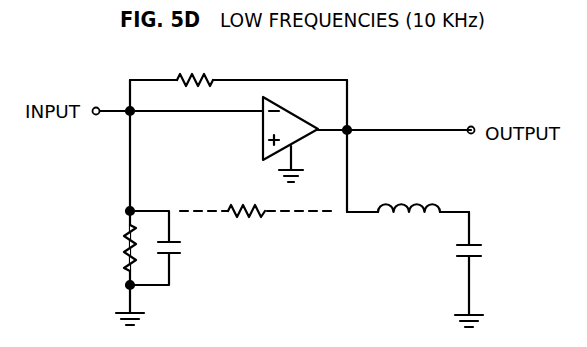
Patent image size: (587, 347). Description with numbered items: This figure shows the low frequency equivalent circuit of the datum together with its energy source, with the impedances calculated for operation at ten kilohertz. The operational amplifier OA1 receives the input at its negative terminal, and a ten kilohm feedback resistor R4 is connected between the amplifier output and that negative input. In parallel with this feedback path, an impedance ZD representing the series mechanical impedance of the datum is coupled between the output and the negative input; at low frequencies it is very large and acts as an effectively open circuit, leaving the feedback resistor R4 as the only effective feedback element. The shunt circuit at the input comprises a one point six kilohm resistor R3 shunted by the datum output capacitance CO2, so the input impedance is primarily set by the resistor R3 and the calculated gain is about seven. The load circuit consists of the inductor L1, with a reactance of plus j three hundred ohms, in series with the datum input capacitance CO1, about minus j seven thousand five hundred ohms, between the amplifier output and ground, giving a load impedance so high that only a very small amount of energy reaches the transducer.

The feedback resistor R4 is at (238, 69).
The operational amplifier OA1 is at (367, 139).
The series mechanical impedance of the datum ZD is at (257, 200).
The resistor R3 is at (107, 249).
The datum output capacitance CO2 is at (187, 248).
The inductor L1 is at (408, 198).
The datum input capacitance CO1 is at (500, 263).